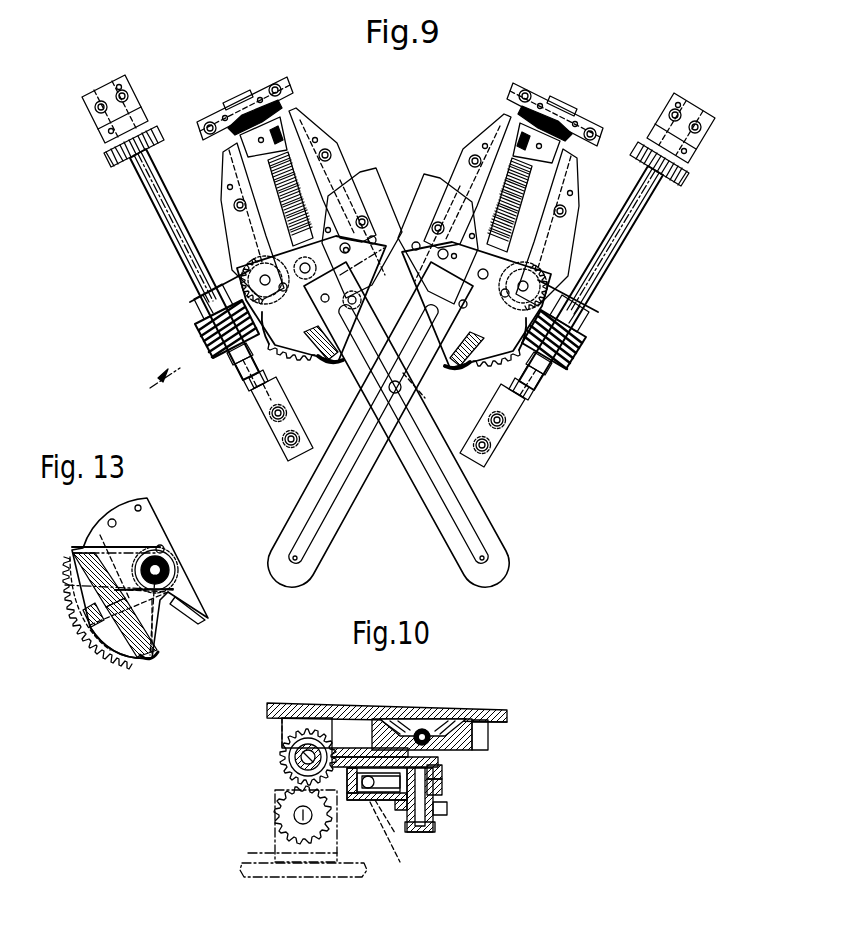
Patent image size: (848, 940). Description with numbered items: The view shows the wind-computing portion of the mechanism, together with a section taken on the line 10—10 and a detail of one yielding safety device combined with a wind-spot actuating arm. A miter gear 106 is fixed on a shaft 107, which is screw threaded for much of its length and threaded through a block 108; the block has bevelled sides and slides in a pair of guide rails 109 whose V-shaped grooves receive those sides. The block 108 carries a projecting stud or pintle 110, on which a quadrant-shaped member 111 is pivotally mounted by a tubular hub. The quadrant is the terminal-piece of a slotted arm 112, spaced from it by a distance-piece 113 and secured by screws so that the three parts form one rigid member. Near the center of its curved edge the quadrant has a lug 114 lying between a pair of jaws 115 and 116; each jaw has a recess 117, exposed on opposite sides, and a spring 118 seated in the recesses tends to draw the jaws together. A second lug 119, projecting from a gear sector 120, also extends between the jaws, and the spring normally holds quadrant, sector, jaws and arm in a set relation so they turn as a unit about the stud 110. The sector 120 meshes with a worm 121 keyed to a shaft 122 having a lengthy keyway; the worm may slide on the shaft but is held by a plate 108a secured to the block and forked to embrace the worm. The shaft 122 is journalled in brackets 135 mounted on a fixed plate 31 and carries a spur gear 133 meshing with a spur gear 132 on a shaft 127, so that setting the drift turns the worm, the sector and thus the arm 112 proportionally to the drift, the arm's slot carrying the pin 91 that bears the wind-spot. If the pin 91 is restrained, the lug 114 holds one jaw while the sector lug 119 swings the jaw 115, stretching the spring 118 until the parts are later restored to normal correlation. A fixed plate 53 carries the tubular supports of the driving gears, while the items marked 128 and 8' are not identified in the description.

In FIG. 9, the miter gear 106 is at (266, 106).
In FIG. 9, the shaft 107 is at (289, 171).
In FIG. 10, the shaft 107 is at (423, 715).
In FIG. 9, the slidable block 108 is at (362, 223).
In FIG. 10, the slidable block 108 is at (420, 707).
In FIG. 9, the plate 108a is at (196, 341).
In FIG. 10, the plate 108a is at (387, 700).
In FIG. 9, the guide rails 109 is at (280, 204).
In FIG. 10, the guide rails 109 is at (400, 714).
In FIG. 9, the stud or pintle 110 is at (350, 252).
In FIG. 13, the stud or pintle 110 is at (180, 578).
In FIG. 10, the stud or pintle 110 is at (424, 833).
In FIG. 9, the quadrant-shaped member 111 is at (294, 293).
In FIG. 13, the quadrant-shaped member 111 is at (131, 578).
In FIG. 10, the quadrant-shaped member 111 is at (393, 824).
In FIG. 9, the slotted arm 112 is at (420, 424).
In FIG. 13, the slotted arm 112 is at (207, 610).
In FIG. 10, the slotted arm 112 is at (450, 834).
In FIG. 10, the distance-piece 113 is at (448, 810).
In FIG. 9, the lug 114 is at (291, 351).
In FIG. 13, the lug 114 is at (109, 651).
In FIG. 10, the lug 114 is at (372, 799).
In FIG. 9, the jaw 115 is at (325, 365).
In FIG. 13, the jaw 115 is at (131, 642).
In FIG. 10, the jaw 115 is at (461, 793).
In FIG. 9, the jaw 116 is at (252, 273).
In FIG. 13, the jaw 116 is at (73, 578).
In FIG. 10, the jaw 116 is at (461, 778).
In FIG. 13, the recess 117 is at (158, 622).
In FIG. 9, the spring 118 is at (317, 385).
In FIG. 13, the spring 118 is at (167, 664).
In FIG. 10, the spring 118 is at (393, 841).
In FIG. 9, the lug 119 is at (228, 367).
In FIG. 13, the lug 119 is at (72, 621).
In FIG. 10, the lug 119 is at (374, 819).
In FIG. 9, the gear sector 120 is at (189, 307).
In FIG. 13, the gear sector 120 is at (75, 613).
In FIG. 10, the gear sector 120 is at (413, 760).
In FIG. 9, the worm 121 is at (204, 329).
In FIG. 10, the worm 121 is at (275, 757).
In FIG. 9, the shaft 122 is at (184, 264).
In FIG. 10, the shaft 122 is at (272, 769).
In FIG. 10, the shaft 127 is at (292, 814).
In FIG. 10, the center line 128 is at (248, 853).
In FIG. 10, the spur gear 132 is at (280, 832).
In FIG. 9, the spur gear 133 is at (116, 160).
In FIG. 10, the spur gear 133 is at (282, 757).
In FIG. 9, the brackets 135 is at (180, 268).
In FIG. 10, the brackets 135 is at (255, 732).
In FIG. 10, the fixed plate 31 is at (502, 723).
In FIG. 10, the fixed plate 53 is at (262, 877).
In FIG. 9, the pin 91 is at (389, 387).
In FIG. 9, the section line 10 is at (277, 311).
In FIG. 9, the section line 8' is at (424, 385).